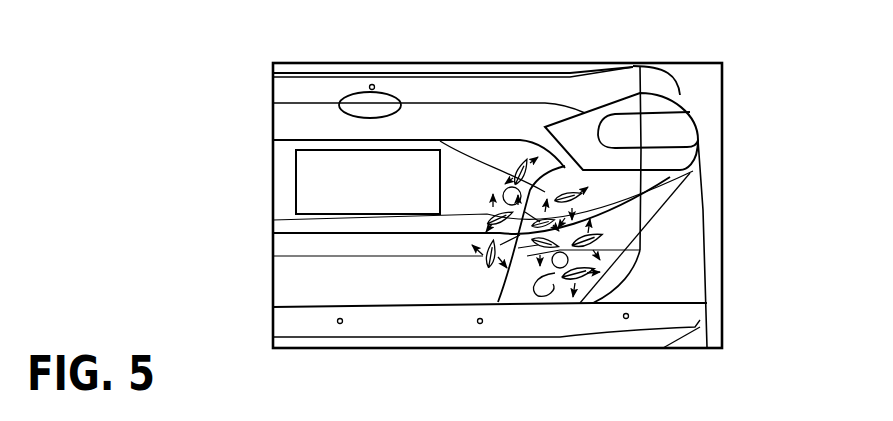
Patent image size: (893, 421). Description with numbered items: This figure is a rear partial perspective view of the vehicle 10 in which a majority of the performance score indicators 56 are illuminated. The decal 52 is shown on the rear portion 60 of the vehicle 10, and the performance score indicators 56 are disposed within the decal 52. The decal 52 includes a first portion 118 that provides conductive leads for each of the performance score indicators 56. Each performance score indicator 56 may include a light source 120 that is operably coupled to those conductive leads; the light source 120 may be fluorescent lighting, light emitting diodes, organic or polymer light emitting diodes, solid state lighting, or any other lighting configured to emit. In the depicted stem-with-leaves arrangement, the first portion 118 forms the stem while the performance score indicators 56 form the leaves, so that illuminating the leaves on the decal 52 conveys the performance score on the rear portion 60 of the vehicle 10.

The vehicle 10 is at (532, 93).
The rear portion 60 is at (307, 122).
The performance score indicators 56 is at (488, 226).
The decal 52 is at (604, 258).
The first portion 118 is at (498, 292).
The light source 120 is at (478, 271).